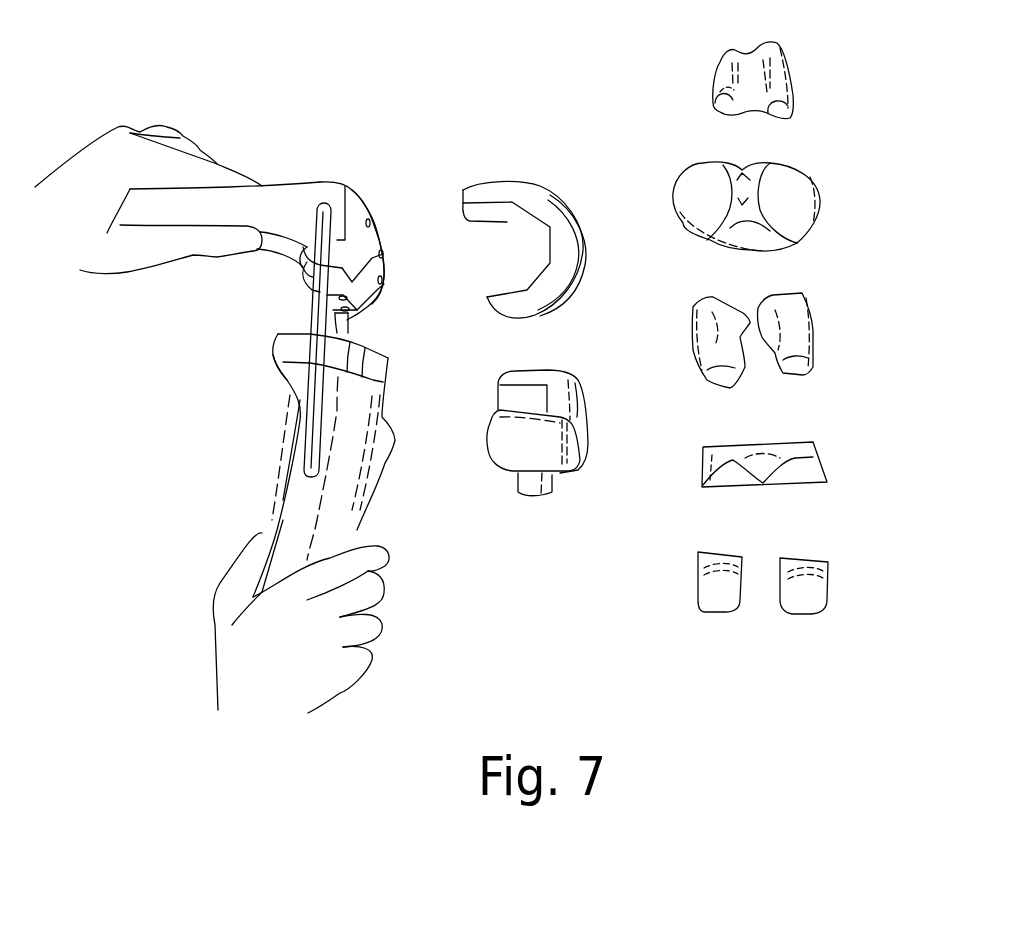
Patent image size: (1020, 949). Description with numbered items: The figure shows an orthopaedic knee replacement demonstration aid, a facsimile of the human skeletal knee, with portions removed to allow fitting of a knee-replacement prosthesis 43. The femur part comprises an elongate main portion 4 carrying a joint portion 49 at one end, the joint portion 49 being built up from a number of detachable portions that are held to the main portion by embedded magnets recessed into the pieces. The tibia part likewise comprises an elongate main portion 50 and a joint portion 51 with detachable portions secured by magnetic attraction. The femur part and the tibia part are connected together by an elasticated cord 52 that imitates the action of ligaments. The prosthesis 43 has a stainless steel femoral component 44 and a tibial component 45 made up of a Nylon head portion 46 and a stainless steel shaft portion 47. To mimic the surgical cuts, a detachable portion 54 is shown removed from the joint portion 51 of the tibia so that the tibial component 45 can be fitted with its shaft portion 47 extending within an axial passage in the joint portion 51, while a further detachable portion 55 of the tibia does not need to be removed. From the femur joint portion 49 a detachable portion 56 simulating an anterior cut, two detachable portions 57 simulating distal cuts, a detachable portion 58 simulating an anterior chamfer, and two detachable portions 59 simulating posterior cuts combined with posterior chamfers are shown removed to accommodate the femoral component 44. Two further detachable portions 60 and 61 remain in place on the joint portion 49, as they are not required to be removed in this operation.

The elongate main portion 4 is at (256, 198).
The joint portion 49 is at (337, 190).
The further detachable portion 61 is at (375, 232).
The further detachable portion 60 is at (345, 247).
The elasticated cord 52 is at (320, 300).
The further detachable portion 55 is at (292, 352).
The joint portion 51 is at (388, 380).
The elongate main portion 50 is at (285, 522).
The femoral component 44 is at (550, 212).
The knee-replacement prosthesis 43 is at (573, 330).
The head portion 46 is at (573, 380).
The tibial component 45 is at (580, 417).
The shaft portion 47 is at (553, 493).
The detachable portion 56 is at (778, 68).
The detachable portion 54 is at (803, 203).
The detachable portions 57 is at (805, 333).
The detachable portion 58 is at (815, 457).
The detachable portions 59 is at (817, 598).